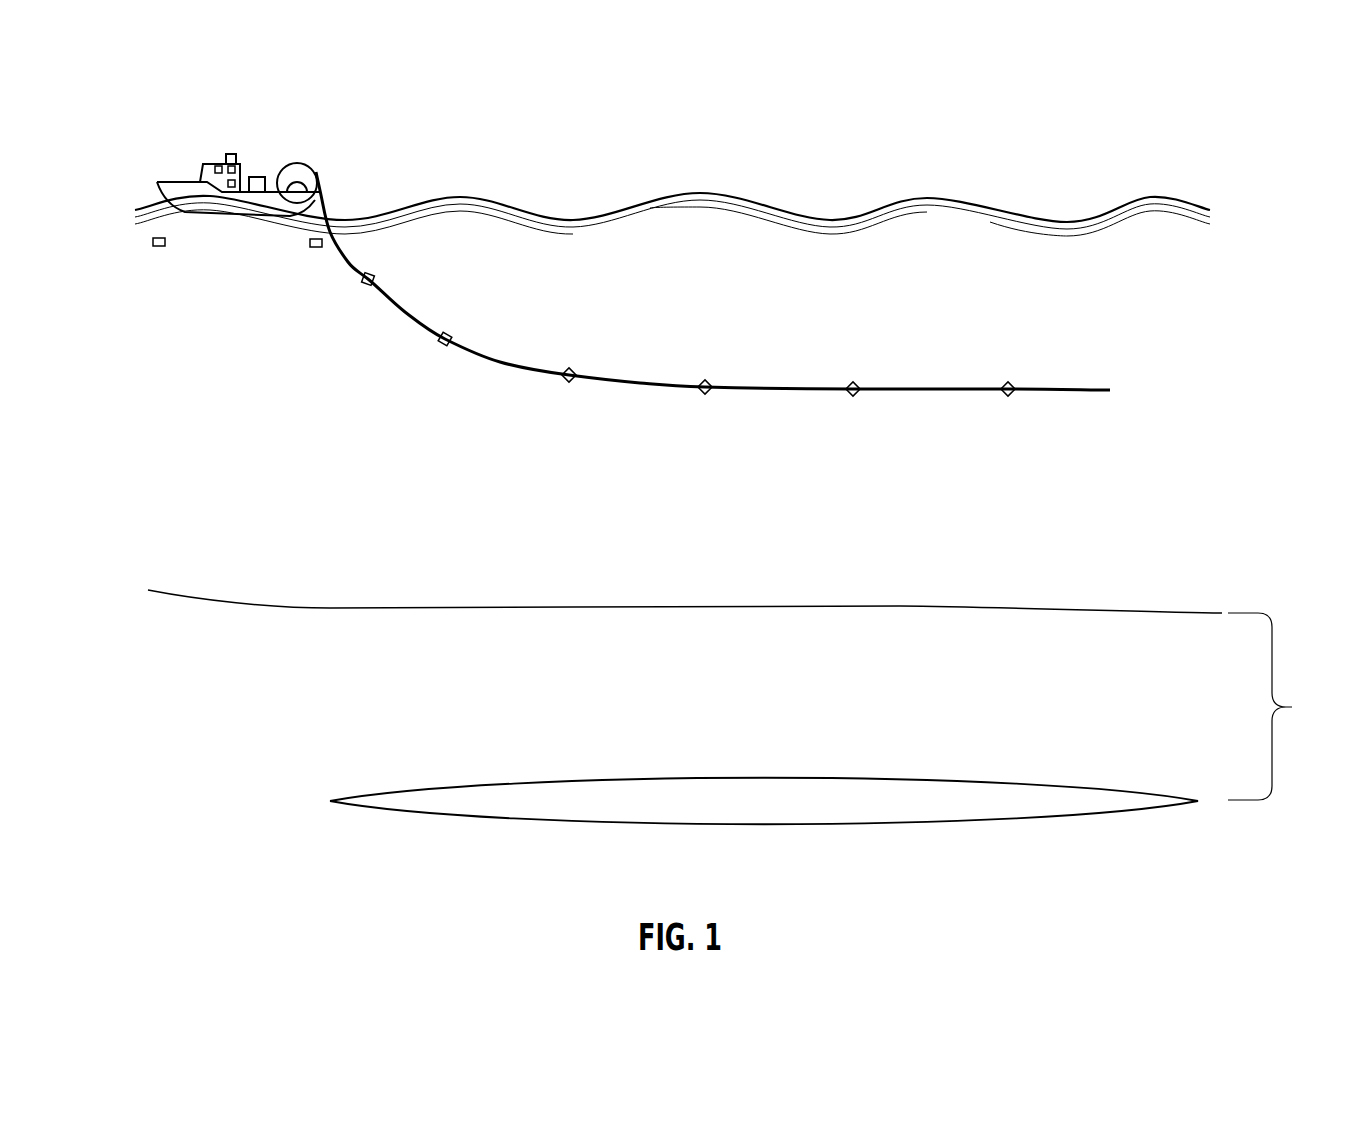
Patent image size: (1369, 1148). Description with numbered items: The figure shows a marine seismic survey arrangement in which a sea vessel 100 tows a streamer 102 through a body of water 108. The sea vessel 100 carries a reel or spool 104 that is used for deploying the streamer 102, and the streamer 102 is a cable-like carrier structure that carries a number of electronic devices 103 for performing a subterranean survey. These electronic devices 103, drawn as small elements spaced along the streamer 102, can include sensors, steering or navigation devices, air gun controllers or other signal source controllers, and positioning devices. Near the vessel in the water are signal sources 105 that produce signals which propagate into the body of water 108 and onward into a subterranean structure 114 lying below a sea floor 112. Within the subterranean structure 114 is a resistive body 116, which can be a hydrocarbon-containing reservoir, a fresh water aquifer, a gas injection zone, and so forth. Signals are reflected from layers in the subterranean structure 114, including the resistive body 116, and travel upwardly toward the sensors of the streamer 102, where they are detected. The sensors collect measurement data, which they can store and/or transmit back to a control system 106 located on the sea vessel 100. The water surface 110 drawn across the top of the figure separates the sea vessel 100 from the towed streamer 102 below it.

The sea vessel 100 is at (170, 181).
The streamer 102 is at (513, 360).
The electronic devices 103 is at (565, 376).
The reel or spool 104 is at (312, 168).
The signal sources 105 is at (157, 248).
The control system 106 is at (257, 178).
The body of water 108 is at (511, 537).
The water surface 110 is at (777, 207).
The sea floor 112 is at (628, 612).
The subterranean structure 114 is at (1282, 706).
The resistive body 116 is at (627, 793).